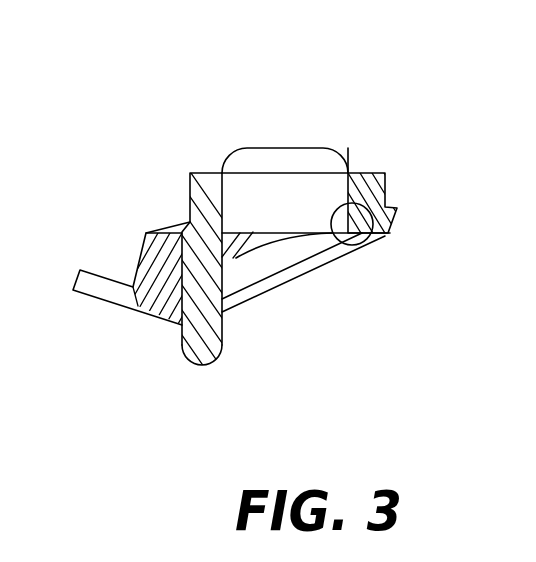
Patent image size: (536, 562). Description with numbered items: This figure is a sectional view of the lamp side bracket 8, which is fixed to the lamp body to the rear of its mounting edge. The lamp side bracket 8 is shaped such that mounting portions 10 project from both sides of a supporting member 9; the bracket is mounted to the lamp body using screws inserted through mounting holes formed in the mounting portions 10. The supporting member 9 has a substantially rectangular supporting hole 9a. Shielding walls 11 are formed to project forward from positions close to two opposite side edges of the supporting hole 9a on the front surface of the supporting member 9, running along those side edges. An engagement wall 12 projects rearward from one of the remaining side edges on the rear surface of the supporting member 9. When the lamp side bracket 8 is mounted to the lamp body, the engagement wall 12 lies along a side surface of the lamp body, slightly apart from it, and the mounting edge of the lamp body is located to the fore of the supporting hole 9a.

The lamp side bracket 8 is at (386, 183).
The supporting member 9 is at (206, 173).
The supporting hole 9a is at (360, 242).
The mounting portion 10 is at (252, 268).
The shielding wall 11 is at (304, 149).
The engagement wall 12 is at (186, 364).